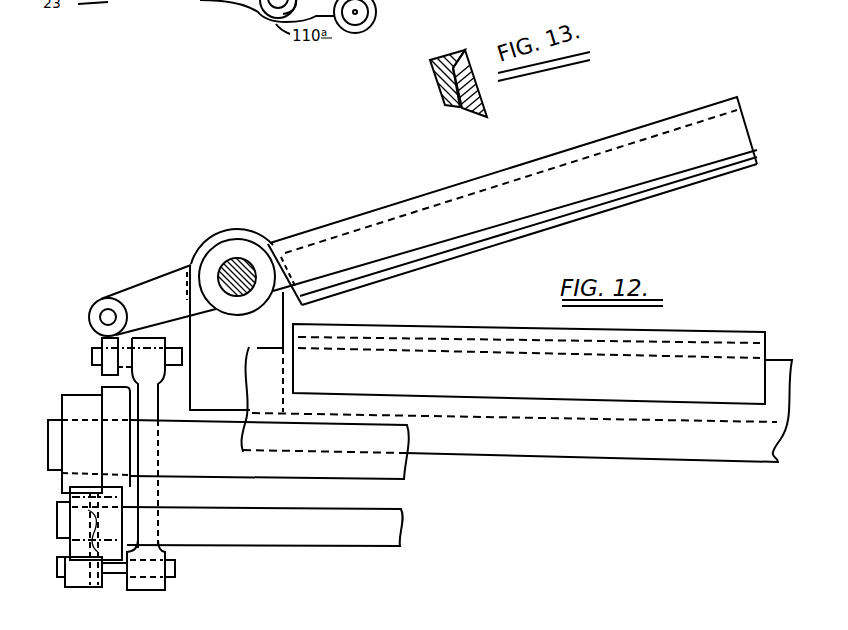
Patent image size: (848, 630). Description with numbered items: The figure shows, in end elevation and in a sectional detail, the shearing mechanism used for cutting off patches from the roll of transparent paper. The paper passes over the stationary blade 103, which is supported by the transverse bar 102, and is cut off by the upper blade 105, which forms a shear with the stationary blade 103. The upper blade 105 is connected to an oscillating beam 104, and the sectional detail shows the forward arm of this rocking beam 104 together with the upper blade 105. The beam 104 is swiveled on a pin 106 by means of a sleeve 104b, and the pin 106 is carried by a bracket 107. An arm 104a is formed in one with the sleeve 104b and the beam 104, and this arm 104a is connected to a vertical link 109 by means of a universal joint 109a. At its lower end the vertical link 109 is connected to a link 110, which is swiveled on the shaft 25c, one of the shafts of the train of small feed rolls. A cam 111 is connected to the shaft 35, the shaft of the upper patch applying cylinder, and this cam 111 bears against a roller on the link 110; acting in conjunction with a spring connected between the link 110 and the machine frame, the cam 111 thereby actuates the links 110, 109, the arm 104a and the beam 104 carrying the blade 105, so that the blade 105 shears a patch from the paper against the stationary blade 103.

In FIG. 13, the oscillating beam 104 is at (436, 56).
In FIG. 12, the oscillating beam 104 is at (358, 222).
In FIG. 12, the arm 104a is at (181, 305).
In FIG. 12, the sleeve 104b is at (216, 249).
In FIG. 13, the upper blade 105 is at (486, 111).
In FIG. 12, the upper blade 105 is at (447, 258).
In FIG. 12, the pin 106 is at (262, 243).
In FIG. 12, the bracket 107 is at (235, 358).
In FIG. 12, the stationary blade 103 is at (432, 330).
In FIG. 12, the transverse bar 102 is at (517, 411).
In FIG. 12, the shaft 35 is at (38, 455).
In FIG. 12, the shaft 25c is at (237, 526).
In FIG. 12, the vertical link 109 is at (147, 489).
In FIG. 12, the universal joint 109a is at (100, 339).
In FIG. 12, the link 110 is at (80, 586).
In FIG. 12, the cam 111 is at (116, 437).